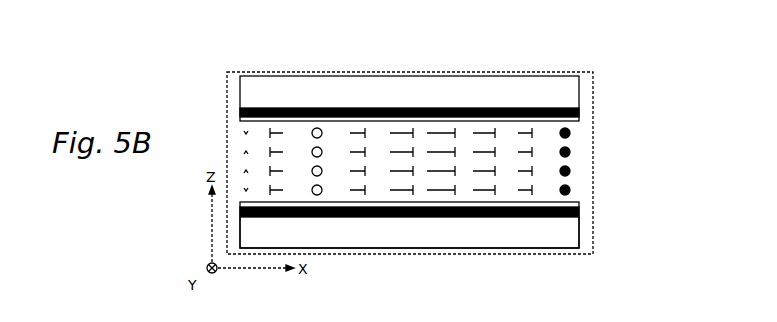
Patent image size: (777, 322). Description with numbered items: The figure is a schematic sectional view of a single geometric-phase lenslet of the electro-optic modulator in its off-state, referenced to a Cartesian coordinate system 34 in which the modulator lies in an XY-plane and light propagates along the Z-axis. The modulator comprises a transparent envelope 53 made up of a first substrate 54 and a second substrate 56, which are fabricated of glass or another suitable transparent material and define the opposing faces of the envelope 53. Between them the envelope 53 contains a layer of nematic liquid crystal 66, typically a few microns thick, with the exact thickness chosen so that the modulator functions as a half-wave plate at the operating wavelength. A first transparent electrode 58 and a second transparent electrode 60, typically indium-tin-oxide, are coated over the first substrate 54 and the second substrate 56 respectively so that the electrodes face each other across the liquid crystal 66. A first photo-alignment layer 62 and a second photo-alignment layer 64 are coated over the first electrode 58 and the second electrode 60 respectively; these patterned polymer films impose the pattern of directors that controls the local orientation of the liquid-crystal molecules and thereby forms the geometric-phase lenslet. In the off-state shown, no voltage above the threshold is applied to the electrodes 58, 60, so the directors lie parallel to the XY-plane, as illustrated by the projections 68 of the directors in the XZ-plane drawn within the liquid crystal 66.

The Cartesian coordinate system 34 is at (190, 222).
The transparent envelope 53 is at (227, 72).
The first substrate 54 is at (569, 90).
The second substrate 56 is at (566, 238).
The first transparent electrode 58 is at (579, 110).
The second transparent electrode 60 is at (592, 219).
The first photo-alignment layer 62 is at (578, 133).
The second photo-alignment layer 64 is at (579, 211).
The nematic liquid crystal 66 is at (533, 170).
The projections of the directors 68 is at (397, 132).